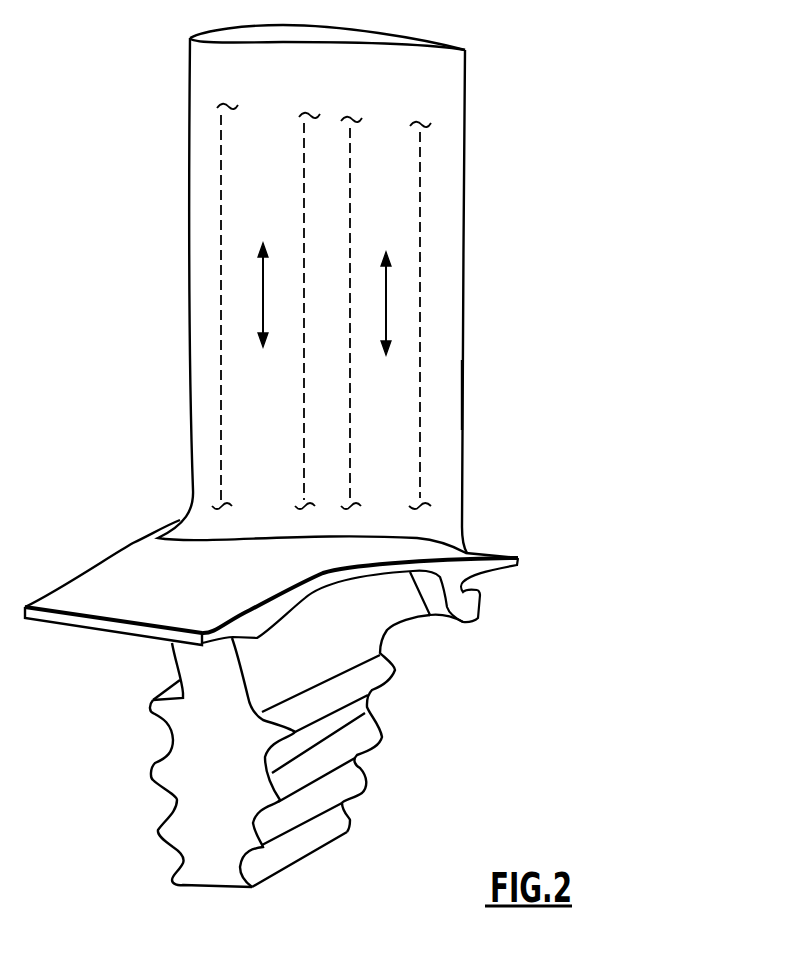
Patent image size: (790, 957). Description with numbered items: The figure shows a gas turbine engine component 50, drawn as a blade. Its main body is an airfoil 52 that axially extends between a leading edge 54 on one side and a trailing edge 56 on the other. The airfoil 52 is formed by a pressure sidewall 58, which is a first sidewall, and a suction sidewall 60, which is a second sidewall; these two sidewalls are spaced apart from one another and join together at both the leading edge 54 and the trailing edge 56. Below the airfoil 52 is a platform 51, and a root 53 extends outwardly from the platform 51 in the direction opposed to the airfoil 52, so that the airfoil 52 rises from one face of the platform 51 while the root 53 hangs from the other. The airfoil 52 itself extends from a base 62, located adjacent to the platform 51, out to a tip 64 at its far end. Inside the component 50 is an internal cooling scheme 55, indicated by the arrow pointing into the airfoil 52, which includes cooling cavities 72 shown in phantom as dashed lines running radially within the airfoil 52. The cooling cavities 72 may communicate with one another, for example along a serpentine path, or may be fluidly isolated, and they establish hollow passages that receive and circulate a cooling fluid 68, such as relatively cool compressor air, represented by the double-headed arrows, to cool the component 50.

The gas turbine engine component 50 is at (609, 147).
The platform 51 is at (110, 604).
The airfoil 52 is at (440, 301).
The root 53 is at (188, 755).
The leading edge 54 is at (188, 247).
The internal cooling scheme 55 is at (329, 108).
The trailing edge 56 is at (466, 183).
The pressure sidewall 58 is at (456, 402).
The suction sidewall 60 is at (178, 84).
The base 62 is at (470, 520).
The tip 64 is at (485, 68).
The cooling fluid 68 is at (263, 287).
The cooling cavities 72 is at (237, 195).